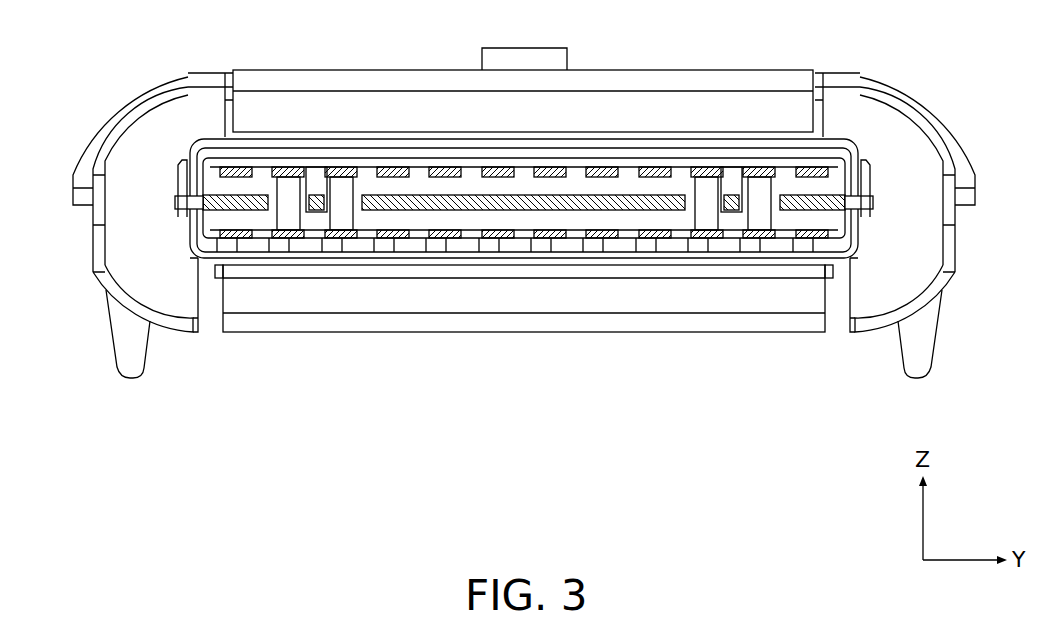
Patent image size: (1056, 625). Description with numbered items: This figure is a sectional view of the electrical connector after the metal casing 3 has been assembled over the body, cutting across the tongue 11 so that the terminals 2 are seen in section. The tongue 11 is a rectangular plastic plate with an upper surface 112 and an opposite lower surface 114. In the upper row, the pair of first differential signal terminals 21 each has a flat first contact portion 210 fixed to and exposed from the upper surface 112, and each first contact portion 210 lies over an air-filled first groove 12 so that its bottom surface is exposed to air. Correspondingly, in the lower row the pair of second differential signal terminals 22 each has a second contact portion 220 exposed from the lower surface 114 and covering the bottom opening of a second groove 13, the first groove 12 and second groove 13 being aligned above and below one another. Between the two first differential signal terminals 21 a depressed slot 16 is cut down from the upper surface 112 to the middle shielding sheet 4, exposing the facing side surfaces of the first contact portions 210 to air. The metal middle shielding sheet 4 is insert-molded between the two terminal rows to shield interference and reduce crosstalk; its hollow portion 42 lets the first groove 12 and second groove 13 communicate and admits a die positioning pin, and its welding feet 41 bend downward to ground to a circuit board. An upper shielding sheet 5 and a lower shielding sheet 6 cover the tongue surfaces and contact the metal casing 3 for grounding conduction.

The metal casing 3 is at (181, 80).
The upper shielding sheet 5 is at (650, 120).
The terminals 2 is at (490, 240).
The tongue 11 is at (573, 238).
The upper surface 112 is at (610, 166).
The lower surface 114 is at (517, 238).
The first differential signal terminals 21 is at (341, 170).
The second contact portion 220 is at (283, 240).
The second differential signal terminals 22 is at (338, 240).
The first groove 12 is at (290, 202).
The first contact portion 210 is at (315, 178).
The depressed slot 16 is at (320, 180).
The hollow portion 42 is at (290, 202).
The second groove 13 is at (290, 222).
The lower shielding sheet 6 is at (413, 295).
The middle shielding sheet 4 is at (843, 200).
The welding foot 41 is at (920, 357).